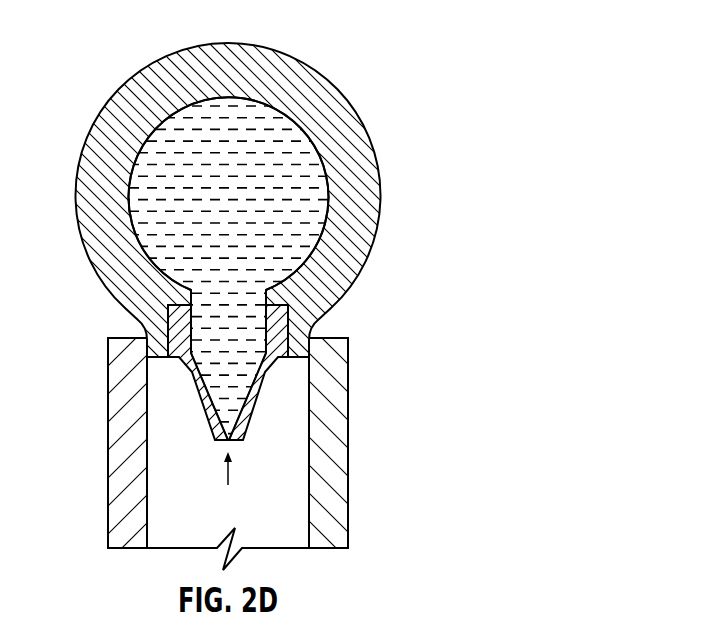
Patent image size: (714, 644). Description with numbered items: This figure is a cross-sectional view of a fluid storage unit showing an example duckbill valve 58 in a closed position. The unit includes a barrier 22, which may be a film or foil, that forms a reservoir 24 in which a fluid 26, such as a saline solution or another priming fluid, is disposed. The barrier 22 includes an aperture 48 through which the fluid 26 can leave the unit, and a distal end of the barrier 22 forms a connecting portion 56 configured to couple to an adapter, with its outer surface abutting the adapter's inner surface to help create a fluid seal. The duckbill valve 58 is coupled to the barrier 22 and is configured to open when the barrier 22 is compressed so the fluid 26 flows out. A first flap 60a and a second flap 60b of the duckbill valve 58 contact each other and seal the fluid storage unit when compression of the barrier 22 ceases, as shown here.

The barrier 22 is at (336, 108).
The reservoir 24 is at (244, 204).
The fluid 26 is at (185, 143).
The aperture 48 is at (224, 310).
The connecting portion 56 is at (318, 333).
The duckbill valve 58 is at (265, 388).
The first flap 60a is at (199, 387).
The second flap 60b is at (216, 440).